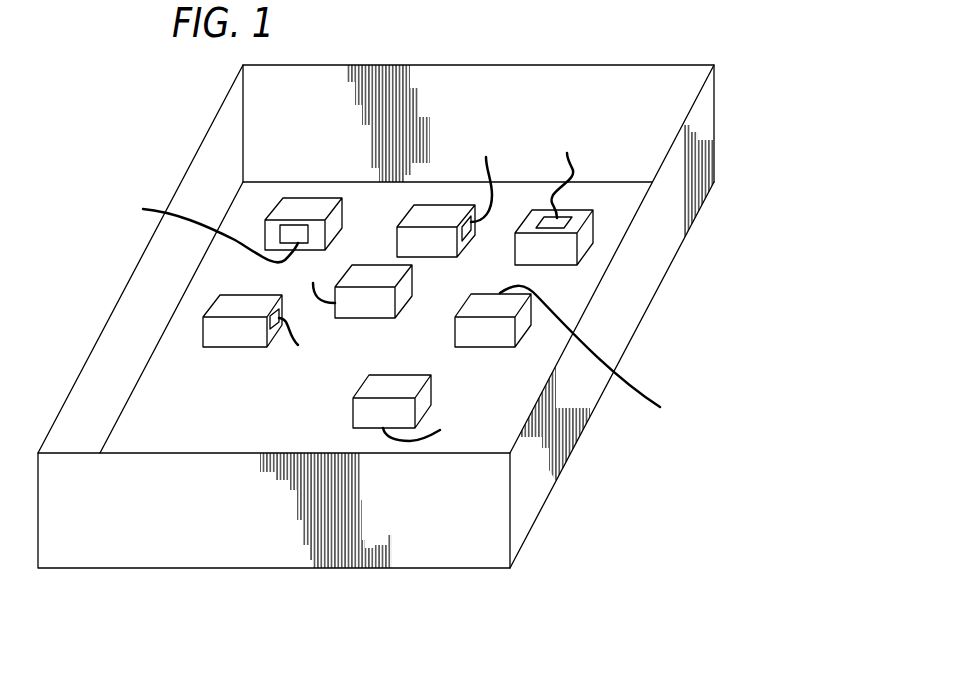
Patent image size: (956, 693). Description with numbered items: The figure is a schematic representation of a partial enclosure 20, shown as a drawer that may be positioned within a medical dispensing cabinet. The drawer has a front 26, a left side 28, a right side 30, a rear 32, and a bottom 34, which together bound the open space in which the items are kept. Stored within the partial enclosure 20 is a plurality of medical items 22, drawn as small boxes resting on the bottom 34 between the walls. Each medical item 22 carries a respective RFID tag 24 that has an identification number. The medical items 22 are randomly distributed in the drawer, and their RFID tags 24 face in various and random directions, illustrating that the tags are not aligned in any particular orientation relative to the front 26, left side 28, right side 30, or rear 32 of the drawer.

The partial enclosure 20 is at (120, 150).
The medical items 22 is at (312, 194).
The RFID tag 24 is at (402, 286).
The front 26 is at (168, 530).
The left side 28 is at (95, 345).
The right side 30 is at (632, 297).
The rear 32 is at (478, 65).
The bottom 34 is at (157, 427).